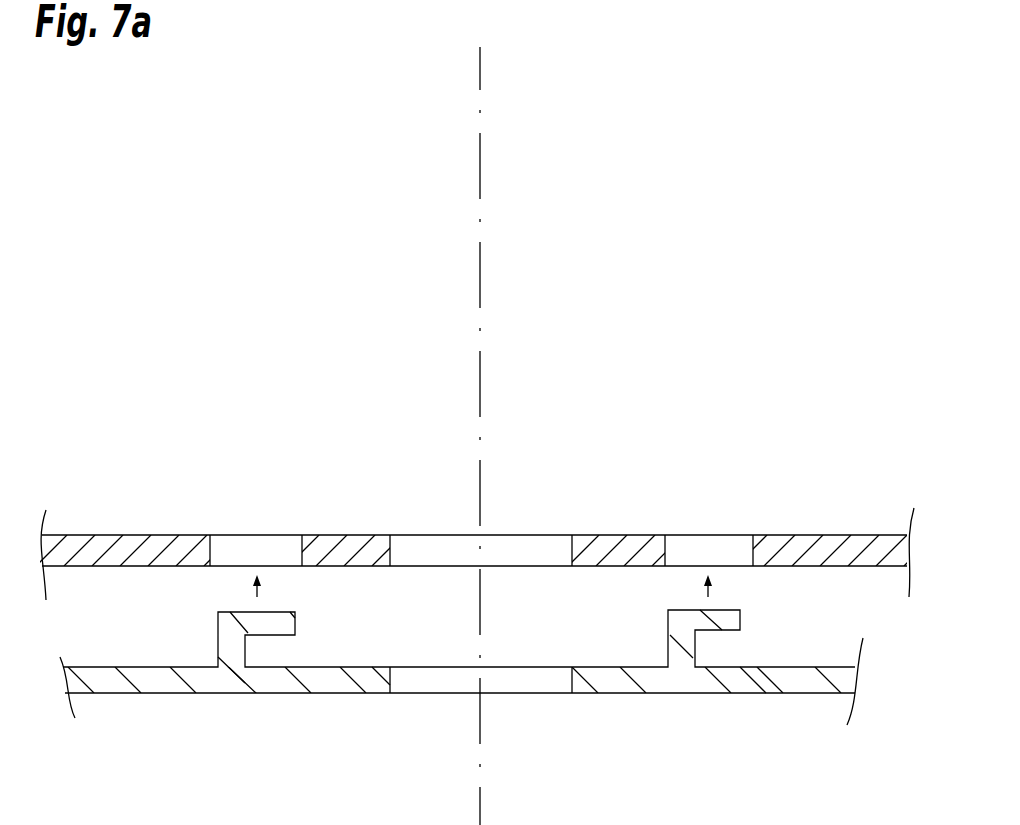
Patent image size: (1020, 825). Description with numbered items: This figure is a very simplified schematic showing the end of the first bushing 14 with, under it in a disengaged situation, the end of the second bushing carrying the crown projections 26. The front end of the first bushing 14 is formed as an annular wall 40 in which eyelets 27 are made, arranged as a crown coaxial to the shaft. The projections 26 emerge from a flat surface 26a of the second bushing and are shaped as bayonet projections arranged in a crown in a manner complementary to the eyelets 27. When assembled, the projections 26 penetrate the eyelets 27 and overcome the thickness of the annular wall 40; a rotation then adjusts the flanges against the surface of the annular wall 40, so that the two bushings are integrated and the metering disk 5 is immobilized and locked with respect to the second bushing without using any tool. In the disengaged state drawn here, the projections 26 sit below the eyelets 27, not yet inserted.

The annular wall 40 is at (153, 533).
The eyelets 27 is at (263, 553).
The first bushing 14 is at (394, 553).
The metering disk 5 is at (835, 509).
The crown projections 26 is at (741, 614).
The flat surface 26a is at (394, 682).